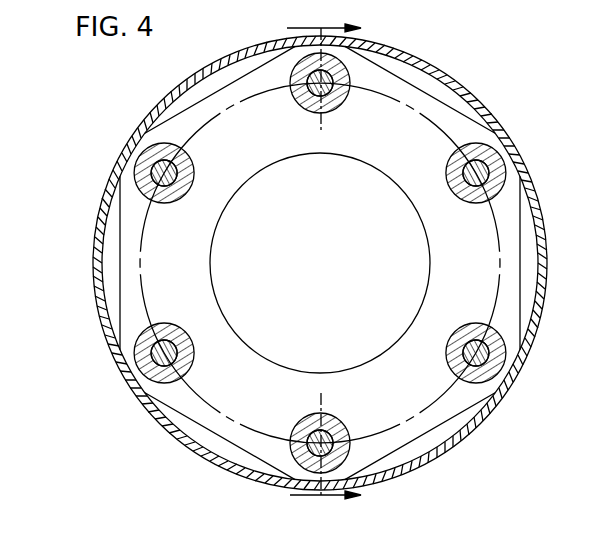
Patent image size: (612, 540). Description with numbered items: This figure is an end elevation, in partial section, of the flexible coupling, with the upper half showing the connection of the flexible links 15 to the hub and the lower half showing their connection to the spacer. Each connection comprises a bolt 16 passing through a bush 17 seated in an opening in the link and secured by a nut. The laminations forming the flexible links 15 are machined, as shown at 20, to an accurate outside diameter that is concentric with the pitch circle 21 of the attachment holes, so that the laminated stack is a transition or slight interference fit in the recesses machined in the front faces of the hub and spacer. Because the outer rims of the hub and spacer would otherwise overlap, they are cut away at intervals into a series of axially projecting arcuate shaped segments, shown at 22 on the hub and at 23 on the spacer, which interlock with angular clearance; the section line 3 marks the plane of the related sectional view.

The section line 3- 3 is at (290, 495).
The flexible links 15 is at (120, 228).
The bolt 16 is at (352, 90).
The bush 17 is at (482, 318).
The machined outer diameter of laminations 20 is at (357, 36).
The pitch circle 21 is at (430, 120).
The arcuate shaped segments on the hub 22 is at (420, 58).
The arcuate shaped segments on the spacer 23 is at (500, 125).